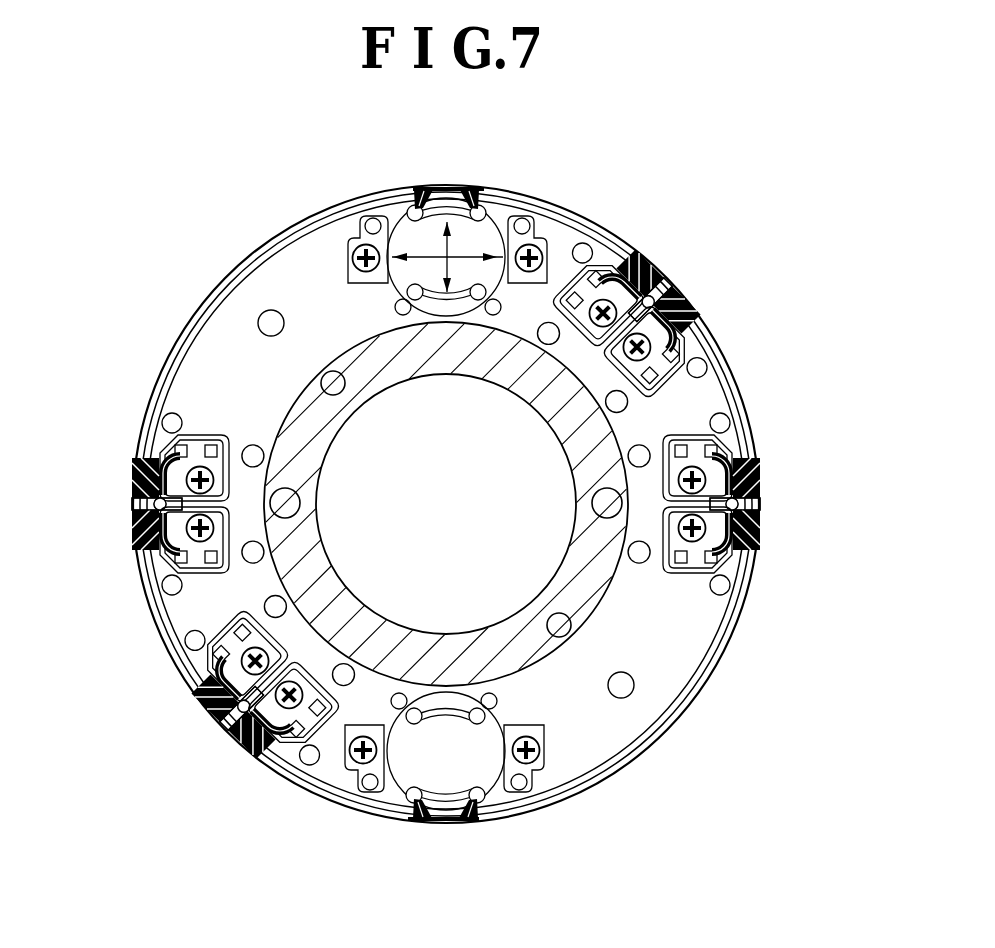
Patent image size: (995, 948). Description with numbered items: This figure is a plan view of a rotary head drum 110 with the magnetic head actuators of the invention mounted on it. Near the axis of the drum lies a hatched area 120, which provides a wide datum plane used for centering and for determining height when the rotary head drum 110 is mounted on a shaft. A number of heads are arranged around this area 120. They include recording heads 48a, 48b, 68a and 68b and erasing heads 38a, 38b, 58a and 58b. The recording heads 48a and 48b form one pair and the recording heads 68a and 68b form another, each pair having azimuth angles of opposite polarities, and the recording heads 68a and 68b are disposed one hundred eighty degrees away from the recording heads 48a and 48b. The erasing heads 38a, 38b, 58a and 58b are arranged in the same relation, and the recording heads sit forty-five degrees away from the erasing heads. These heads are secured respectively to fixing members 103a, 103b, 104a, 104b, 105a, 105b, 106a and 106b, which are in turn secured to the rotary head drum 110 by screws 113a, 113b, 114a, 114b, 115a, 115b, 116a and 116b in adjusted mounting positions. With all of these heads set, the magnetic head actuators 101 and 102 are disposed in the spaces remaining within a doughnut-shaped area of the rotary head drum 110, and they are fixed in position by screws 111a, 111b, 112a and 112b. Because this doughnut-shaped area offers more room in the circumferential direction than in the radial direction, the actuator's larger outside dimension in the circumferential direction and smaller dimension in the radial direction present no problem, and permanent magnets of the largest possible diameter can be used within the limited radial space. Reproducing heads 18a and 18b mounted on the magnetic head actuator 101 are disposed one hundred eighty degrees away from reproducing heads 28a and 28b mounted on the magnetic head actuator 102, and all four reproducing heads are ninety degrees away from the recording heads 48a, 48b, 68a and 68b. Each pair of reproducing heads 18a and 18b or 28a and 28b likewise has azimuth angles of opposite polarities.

The rotary head drum 110 is at (298, 286).
The area 120 is at (298, 410).
The magnetic head actuator 101 is at (488, 240).
The magnetic head actuator 102 is at (480, 752).
The reproducing head 18a is at (466, 189).
The reproducing head 18b is at (430, 189).
The reproducing head 28a is at (432, 822).
The reproducing head 28b is at (464, 822).
The screw 111a is at (543, 225).
The screw 111b is at (368, 236).
The screw 112a is at (328, 775).
The screw 112b is at (530, 768).
The fixing member 103a is at (705, 325).
The fixing member 103b is at (605, 265).
The fixing member 104a is at (735, 550).
The fixing member 104b is at (727, 448).
The fixing member 105a is at (210, 667).
The fixing member 105b is at (283, 740).
The fixing member 106a is at (163, 448).
The fixing member 106b is at (167, 558).
The screw 113a is at (665, 390).
The screw 113b is at (652, 262).
The screw 114a is at (740, 565).
The screw 114b is at (742, 456).
The screw 115a is at (185, 645).
The screw 115b is at (262, 740).
The screw 116a is at (190, 440).
The screw 116b is at (188, 560).
The erasing head 38a is at (660, 273).
The erasing head 38b is at (660, 268).
The recording head 48a is at (757, 515).
The recording head 48b is at (760, 487).
The erasing head 58a is at (237, 707).
The erasing head 58b is at (247, 733).
The recording head 68a is at (142, 483).
The recording head 68b is at (142, 522).